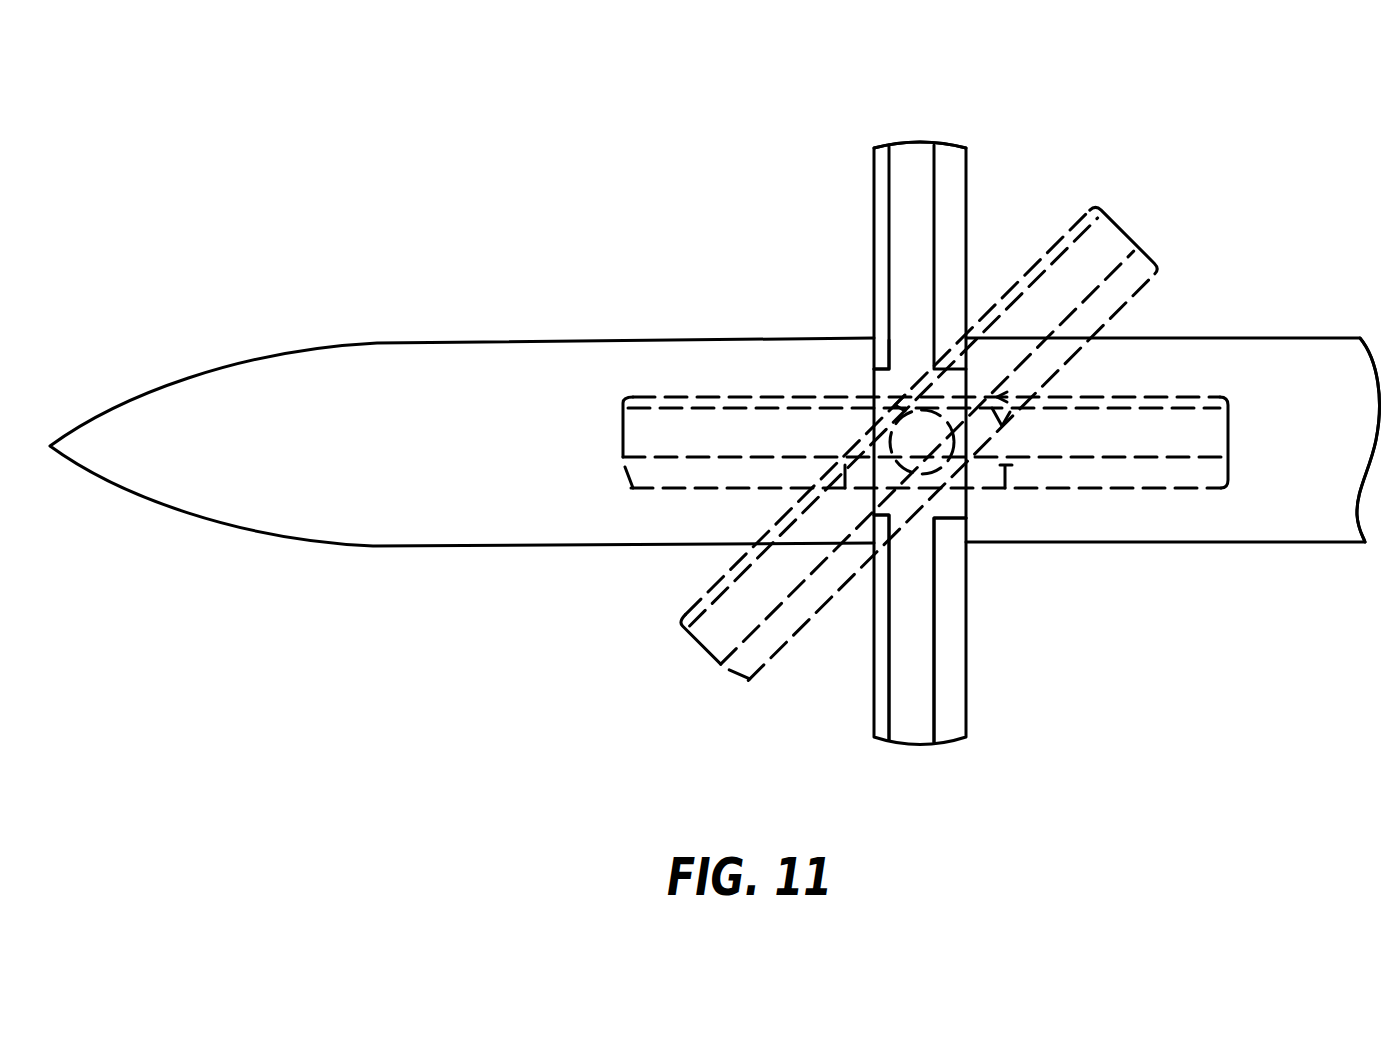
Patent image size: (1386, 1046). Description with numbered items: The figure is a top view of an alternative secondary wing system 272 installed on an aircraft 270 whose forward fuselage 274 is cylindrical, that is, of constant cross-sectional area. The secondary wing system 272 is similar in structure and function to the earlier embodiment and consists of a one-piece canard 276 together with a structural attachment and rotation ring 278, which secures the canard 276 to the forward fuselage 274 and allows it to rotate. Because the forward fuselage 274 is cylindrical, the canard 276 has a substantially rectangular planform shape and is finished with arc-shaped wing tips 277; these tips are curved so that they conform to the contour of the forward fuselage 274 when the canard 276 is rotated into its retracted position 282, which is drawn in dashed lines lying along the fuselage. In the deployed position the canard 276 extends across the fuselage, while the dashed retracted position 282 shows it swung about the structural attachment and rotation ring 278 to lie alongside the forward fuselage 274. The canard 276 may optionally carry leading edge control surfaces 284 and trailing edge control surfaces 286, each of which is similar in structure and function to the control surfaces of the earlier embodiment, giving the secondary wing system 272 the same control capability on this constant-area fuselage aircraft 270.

The aircraft 270 is at (1303, 315).
The secondary wing system 272 is at (1006, 279).
The forward fuselage 274 is at (1272, 465).
The canard 276 is at (812, 214).
The arc-shaped wing tips 277 is at (916, 142).
The structural attachment and rotation ring 278 is at (875, 362).
The retracted position 282 is at (617, 484).
The leading edge control surfaces 284 is at (883, 682).
The trailing edge control surfaces 286 is at (958, 650).